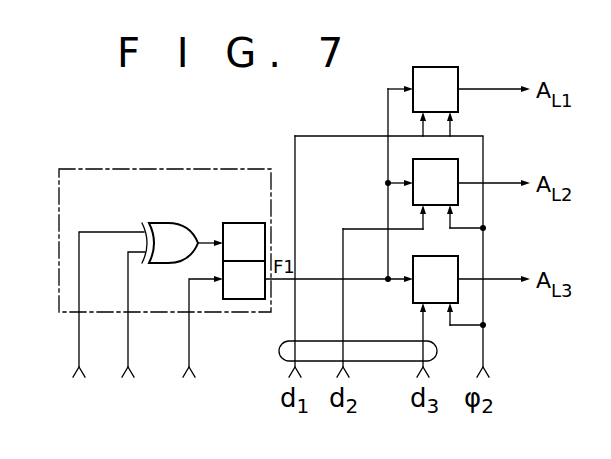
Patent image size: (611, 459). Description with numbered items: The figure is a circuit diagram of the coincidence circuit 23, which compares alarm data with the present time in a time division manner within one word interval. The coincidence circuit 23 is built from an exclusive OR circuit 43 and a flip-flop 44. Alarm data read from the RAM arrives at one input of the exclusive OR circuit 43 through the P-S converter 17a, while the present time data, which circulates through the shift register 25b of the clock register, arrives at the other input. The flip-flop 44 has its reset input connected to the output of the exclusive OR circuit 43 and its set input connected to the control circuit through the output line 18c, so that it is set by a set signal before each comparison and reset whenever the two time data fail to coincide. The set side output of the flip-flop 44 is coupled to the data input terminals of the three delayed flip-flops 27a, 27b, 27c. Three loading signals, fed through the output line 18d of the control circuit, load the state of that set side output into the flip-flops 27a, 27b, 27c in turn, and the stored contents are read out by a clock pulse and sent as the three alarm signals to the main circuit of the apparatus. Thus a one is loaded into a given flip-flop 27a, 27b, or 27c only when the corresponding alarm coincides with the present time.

The coincidence circuit 23 is at (243, 156).
The exclusive OR circuit 43 is at (164, 222).
The flip-flop 44 is at (248, 222).
The delayed flip-flop 27a is at (443, 67).
The delayed flip-flop 27b is at (458, 170).
The delayed flip-flop 27c is at (458, 272).
The output line 18c is at (203, 344).
The output line 18d is at (279, 351).
The P-S converter 17a is at (88, 327).
The shift register 25b is at (143, 337).